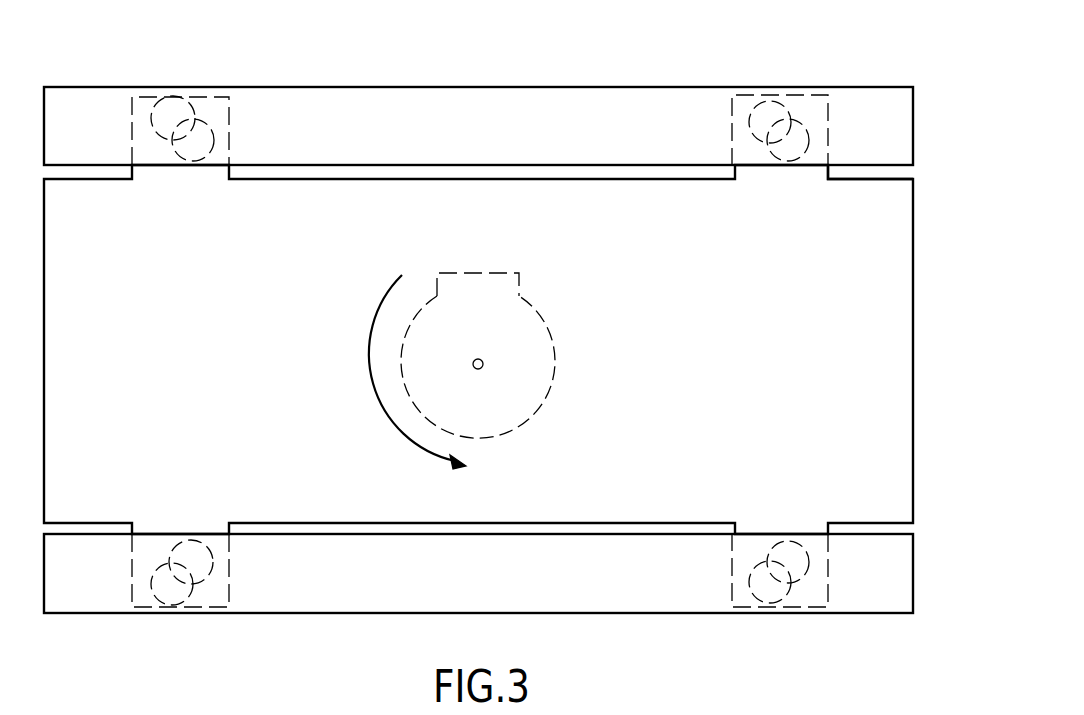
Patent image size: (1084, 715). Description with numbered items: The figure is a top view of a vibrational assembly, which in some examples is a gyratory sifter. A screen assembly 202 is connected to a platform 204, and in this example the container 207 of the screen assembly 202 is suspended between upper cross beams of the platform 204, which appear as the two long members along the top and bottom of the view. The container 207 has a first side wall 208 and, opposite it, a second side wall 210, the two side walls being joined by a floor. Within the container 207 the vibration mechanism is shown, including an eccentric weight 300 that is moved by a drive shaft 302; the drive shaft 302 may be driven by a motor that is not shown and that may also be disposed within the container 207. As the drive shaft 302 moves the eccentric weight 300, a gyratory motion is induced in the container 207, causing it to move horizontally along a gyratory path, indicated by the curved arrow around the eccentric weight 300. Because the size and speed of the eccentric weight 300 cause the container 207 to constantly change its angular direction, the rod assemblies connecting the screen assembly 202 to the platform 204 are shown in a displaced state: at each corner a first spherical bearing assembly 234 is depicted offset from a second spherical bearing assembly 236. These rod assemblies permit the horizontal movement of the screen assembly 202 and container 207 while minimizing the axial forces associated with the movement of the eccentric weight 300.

The screen assembly 202 is at (913, 360).
The platform 204 is at (623, 100).
The container 207 is at (820, 240).
The first side wall 208 is at (905, 178).
The second side wall 210 is at (903, 524).
The first spherical bearing assembly 234 is at (202, 120).
The second spherical bearing assembly 236 is at (163, 100).
The eccentric weight 300 is at (532, 385).
The drive shaft 302 is at (481, 361).